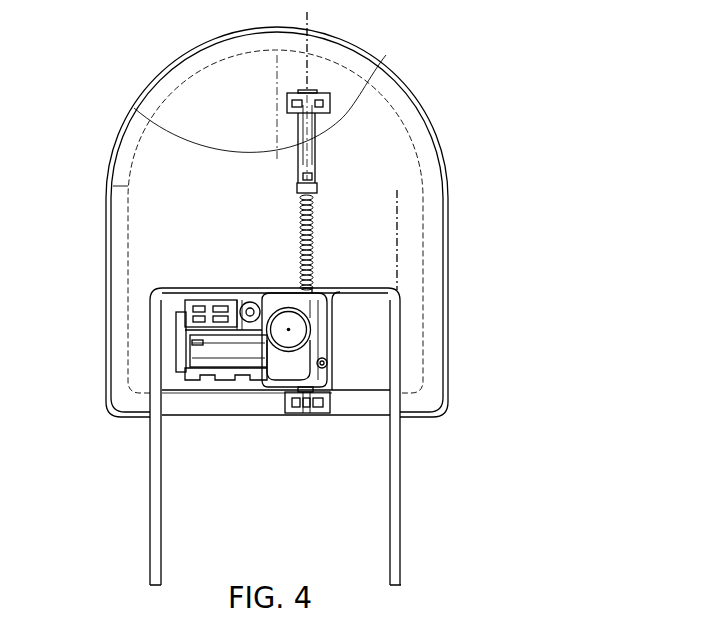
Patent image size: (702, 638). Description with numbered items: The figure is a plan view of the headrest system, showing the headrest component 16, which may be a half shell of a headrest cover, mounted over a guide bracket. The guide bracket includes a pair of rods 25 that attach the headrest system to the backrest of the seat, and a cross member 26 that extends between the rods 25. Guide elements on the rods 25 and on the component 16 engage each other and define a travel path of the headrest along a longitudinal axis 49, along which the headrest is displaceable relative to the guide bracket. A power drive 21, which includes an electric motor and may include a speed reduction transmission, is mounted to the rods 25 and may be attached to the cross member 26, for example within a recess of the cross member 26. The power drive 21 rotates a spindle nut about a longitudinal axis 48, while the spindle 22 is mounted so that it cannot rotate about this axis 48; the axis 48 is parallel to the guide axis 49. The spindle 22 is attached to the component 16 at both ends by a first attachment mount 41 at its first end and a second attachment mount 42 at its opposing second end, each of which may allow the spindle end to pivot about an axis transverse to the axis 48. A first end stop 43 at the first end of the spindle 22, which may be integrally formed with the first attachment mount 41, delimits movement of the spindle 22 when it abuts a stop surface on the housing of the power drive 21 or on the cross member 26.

The component of the headrest 16 is at (437, 138).
The power drive 21 is at (190, 335).
The spindle 22 is at (306, 236).
The rods 25 is at (157, 523).
The cross member 26 is at (364, 306).
The first attachment mount 41 is at (316, 97).
The second attachment mount 42 is at (315, 412).
The first end stop 43 is at (314, 190).
The longitudinal axis of the spindle 48 is at (307, 56).
The longitudinal axis of the guide elements 49 is at (399, 260).